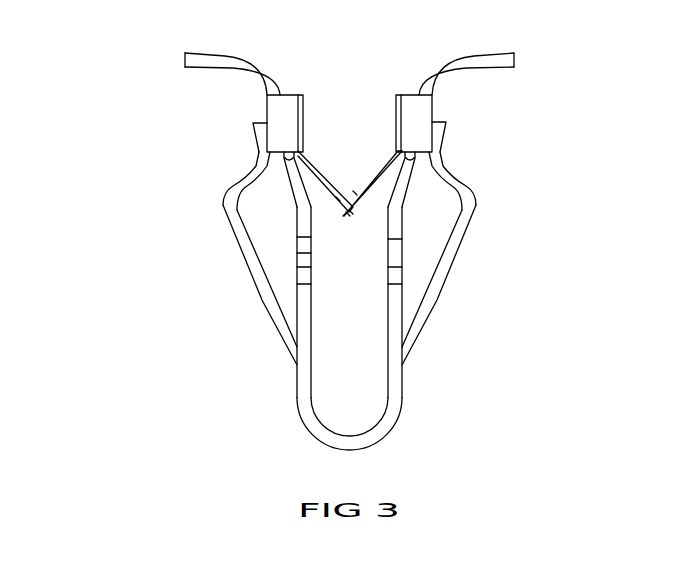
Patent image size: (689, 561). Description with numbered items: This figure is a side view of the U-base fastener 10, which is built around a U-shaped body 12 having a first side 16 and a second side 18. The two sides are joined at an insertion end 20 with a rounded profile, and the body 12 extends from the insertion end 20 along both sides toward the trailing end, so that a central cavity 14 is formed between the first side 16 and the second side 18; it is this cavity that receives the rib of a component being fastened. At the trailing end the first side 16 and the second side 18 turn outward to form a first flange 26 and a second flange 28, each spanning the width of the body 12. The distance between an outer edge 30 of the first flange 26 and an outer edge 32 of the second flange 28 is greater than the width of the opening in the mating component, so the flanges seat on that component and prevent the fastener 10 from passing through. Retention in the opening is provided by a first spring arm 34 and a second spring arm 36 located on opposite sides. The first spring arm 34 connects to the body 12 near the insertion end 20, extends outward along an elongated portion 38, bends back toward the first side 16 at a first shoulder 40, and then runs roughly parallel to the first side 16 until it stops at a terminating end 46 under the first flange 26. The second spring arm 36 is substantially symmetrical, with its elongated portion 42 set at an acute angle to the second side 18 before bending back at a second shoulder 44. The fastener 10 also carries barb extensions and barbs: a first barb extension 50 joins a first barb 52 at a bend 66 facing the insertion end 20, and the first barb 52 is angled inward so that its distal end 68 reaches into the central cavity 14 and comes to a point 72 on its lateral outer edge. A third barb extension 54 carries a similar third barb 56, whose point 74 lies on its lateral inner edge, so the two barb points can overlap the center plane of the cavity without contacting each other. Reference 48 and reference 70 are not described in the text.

The fastener 10 is at (108, 98).
The body 12 is at (393, 383).
The central cavity 14 is at (322, 90).
The first side 16 is at (303, 360).
The second side 18 is at (395, 363).
The insertion end 20 is at (350, 443).
The first flange 26 is at (227, 53).
The second flange 28 is at (483, 58).
The outer edge of the first flange 30 is at (184, 57).
The outer edge of the second flange 32 is at (514, 59).
The first spring arm 34 is at (273, 305).
The second spring arm 36 is at (437, 285).
The elongated portion 38 is at (253, 256).
The first shoulder 40 is at (223, 202).
The elongated portion 42 is at (451, 248).
The second shoulder 44 is at (470, 200).
The terminating end 46 is at (264, 126).
The second flange 48 is at (433, 123).
The first barb extension 50 is at (278, 105).
The first barb 52 is at (324, 180).
The third barb extension 54 is at (412, 110).
The third barb 56 is at (383, 173).
The bend 66 is at (283, 165).
The distal end 68 is at (348, 214).
The second lower joint 70 is at (351, 212).
The point 72 is at (338, 198).
The point 74 is at (355, 192).